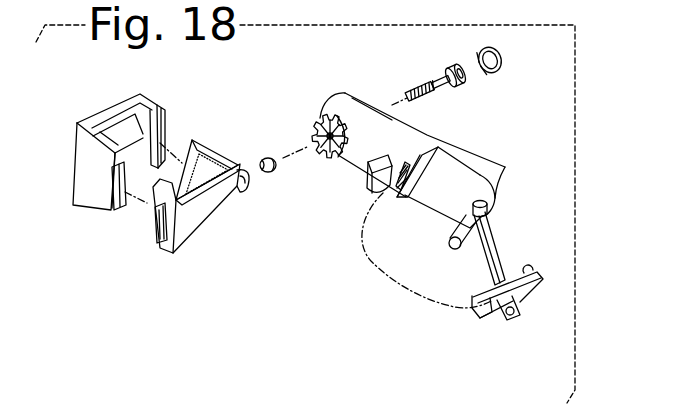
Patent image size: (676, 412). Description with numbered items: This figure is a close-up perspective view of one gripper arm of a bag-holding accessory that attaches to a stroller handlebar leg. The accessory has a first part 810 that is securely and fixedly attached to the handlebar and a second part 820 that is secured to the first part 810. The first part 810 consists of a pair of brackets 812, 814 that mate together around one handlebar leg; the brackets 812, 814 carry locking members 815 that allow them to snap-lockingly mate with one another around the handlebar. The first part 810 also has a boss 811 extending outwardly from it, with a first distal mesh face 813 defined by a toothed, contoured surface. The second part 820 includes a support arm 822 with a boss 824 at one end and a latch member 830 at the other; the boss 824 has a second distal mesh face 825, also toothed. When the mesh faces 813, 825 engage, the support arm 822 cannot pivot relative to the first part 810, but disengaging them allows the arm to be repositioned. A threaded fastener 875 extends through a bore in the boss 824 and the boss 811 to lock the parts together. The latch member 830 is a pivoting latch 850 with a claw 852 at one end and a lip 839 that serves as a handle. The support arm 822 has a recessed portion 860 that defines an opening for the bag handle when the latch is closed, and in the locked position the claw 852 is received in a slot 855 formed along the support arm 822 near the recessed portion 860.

The first part 810 is at (108, 235).
The boss 811 is at (238, 197).
The bracket 812 is at (85, 167).
The first distal mesh face 813 is at (238, 163).
The bracket 814 is at (193, 235).
The locking members 815 is at (155, 135).
The second part 820 is at (339, 184).
The support arm 822 is at (425, 135).
The boss 824 is at (332, 117).
The second distal mesh face 825 is at (318, 132).
The latch member 830 is at (503, 242).
The lip 839 is at (537, 273).
The pivoting latch 850 is at (480, 270).
The claw 852 is at (470, 310).
The slot 855 is at (403, 177).
The recessed portion 860 is at (463, 182).
The fastener 875 is at (440, 86).